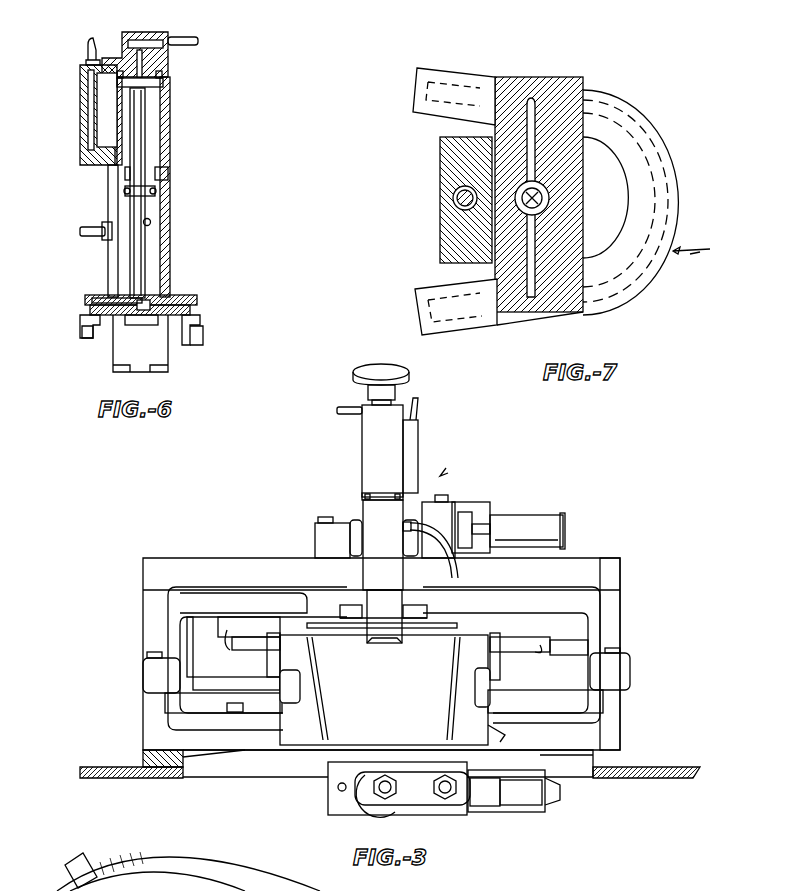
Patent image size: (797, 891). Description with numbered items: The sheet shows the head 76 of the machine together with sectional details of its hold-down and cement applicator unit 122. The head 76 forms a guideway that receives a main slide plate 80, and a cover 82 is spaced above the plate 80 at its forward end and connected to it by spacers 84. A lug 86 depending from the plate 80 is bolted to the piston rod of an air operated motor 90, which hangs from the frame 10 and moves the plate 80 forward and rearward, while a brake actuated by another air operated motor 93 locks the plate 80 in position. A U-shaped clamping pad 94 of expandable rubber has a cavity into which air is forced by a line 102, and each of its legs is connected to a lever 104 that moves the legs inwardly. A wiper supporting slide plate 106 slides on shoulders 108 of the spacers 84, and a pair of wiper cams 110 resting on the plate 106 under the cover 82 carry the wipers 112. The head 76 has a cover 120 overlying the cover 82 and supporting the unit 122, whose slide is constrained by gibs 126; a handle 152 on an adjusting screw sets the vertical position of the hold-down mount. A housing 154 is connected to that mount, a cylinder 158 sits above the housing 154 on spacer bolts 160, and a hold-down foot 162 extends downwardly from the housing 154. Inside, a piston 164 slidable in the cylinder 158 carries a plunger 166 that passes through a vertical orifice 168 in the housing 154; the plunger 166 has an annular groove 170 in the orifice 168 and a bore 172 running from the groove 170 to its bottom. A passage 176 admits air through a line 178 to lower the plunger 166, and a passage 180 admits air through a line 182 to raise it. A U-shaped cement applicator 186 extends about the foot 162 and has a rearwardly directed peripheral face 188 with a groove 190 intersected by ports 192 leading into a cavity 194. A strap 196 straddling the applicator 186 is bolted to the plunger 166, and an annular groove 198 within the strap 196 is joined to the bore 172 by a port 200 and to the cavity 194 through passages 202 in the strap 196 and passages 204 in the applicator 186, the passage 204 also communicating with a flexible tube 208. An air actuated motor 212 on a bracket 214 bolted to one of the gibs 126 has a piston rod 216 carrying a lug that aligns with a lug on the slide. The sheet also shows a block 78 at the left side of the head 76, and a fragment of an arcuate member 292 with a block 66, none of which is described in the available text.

In FIG. 3, the frame 10 is at (655, 763).
In FIG. 3, the clamp block 66 is at (84, 853).
In FIG. 3, the head 76 is at (612, 728).
In FIG. 3, the left clamp block 78 is at (152, 676).
In FIG. 3, the main slide plate 80 is at (178, 703).
In FIG. 3, the cover 82 is at (268, 600).
In FIG. 3, the spacers 84 is at (566, 645).
In FIG. 3, the lug 86 is at (398, 760).
In FIG. 3, the air operated motor 90 is at (375, 812).
In FIG. 3, the air operated motor 93 is at (498, 805).
In FIG. 3, the U-shaped clamping pad 94 is at (320, 716).
In FIG. 3, the line 102 is at (505, 738).
In FIG. 3, the lever 104 is at (562, 684).
In FIG. 3, the wiper supporting slide plate 106 is at (258, 643).
In FIG. 3, the shoulders 108 is at (230, 668).
In FIG. 3, the wiper cams 110 is at (510, 625).
In FIG. 3, the wipers 112 is at (445, 626).
In FIG. 3, the cover 120 is at (176, 566).
In FIG. 3, the hold-down and cement applicator unit 122 is at (440, 475).
In FIG. 3, the gibs 126 is at (320, 533).
In FIG. 3, the handle 152 is at (372, 367).
In FIG. 6, the housing 154 is at (168, 242).
In FIG. 6, the cylinder 158 is at (170, 102).
In FIG. 3, the cylinder 158 is at (372, 446).
In FIG. 6, the spacer bolts 160 is at (168, 170).
In FIG. 6, the hold-down foot 162 is at (128, 352).
In FIG. 7, the hold-down foot 162 is at (450, 220).
In FIG. 3, the hold-down foot 162 is at (392, 625).
In FIG. 6, the piston 164 is at (145, 81).
In FIG. 6, the plunger 166 is at (140, 122).
In FIG. 6, the vertical orifice 168 is at (151, 223).
In FIG. 6, the annular groove 170 is at (155, 196).
In FIG. 7, the bore 172 is at (542, 196).
In FIG. 6, the passage 176 is at (128, 55).
In FIG. 6, the line 178 is at (186, 36).
In FIG. 6, the passage 180 is at (108, 152).
In FIG. 6, the line 182 is at (90, 52).
In FIG. 6, the U-shaped cement applicator 186 is at (85, 339).
In FIG. 7, the U-shaped cement applicator 186 is at (721, 255).
In FIG. 3, the U-shaped cement applicator 186 is at (348, 620).
In FIG. 7, the peripheral face 188 is at (655, 262).
In FIG. 7, the groove 190 is at (612, 303).
In FIG. 6, the ports 192 is at (82, 330).
In FIG. 7, the ports 192 is at (508, 80).
In FIG. 6, the cavity 194 is at (203, 340).
In FIG. 7, the cavity 194 is at (430, 295).
In FIG. 6, the strap 196 is at (195, 298).
In FIG. 7, the strap 196 is at (560, 235).
In FIG. 6, the annular groove 198 is at (150, 302).
In FIG. 7, the annular groove 198 is at (548, 190).
In FIG. 7, the port 200 is at (542, 204).
In FIG. 6, the passages 202 is at (104, 296).
In FIG. 7, the passages 202 is at (532, 282).
In FIG. 6, the passages 204 is at (198, 318).
In FIG. 6, the flexible tube 208 is at (95, 226).
In FIG. 3, the flexible tube 208 is at (462, 570).
In FIG. 3, the air actuated motor 212 is at (530, 520).
In FIG. 3, the bracket 214 is at (488, 503).
In FIG. 3, the piston rod 216 is at (466, 512).
In FIG. 3, the arc guide 292 is at (272, 890).